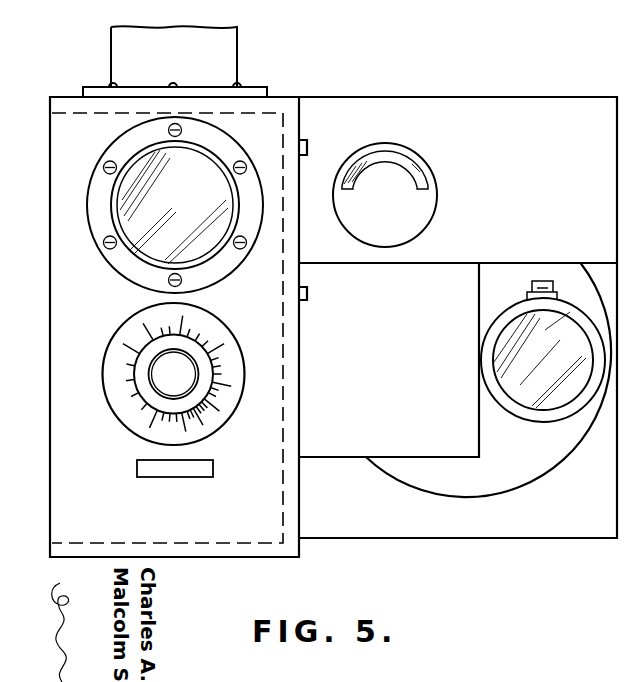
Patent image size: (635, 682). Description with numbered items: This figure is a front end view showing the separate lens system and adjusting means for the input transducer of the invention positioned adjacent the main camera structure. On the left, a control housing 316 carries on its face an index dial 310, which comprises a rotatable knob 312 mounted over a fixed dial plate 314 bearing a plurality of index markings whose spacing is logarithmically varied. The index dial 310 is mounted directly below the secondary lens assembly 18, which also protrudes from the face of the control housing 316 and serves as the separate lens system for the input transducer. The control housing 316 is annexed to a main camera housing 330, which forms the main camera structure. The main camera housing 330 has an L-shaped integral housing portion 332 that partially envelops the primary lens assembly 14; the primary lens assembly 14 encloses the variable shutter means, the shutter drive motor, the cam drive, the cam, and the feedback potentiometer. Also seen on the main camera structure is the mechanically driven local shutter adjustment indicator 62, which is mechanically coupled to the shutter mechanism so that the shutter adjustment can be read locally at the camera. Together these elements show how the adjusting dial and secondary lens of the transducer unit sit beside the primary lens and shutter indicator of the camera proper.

The primary lens assembly 14 is at (530, 366).
The secondary lens assembly 18 is at (165, 213).
The local shutter adjustment indicator 62 is at (397, 145).
The index dial 310 is at (150, 371).
The rotatable knob 312 is at (163, 380).
The fixed dial plate 314 is at (138, 315).
The control housing 316 is at (160, 528).
The main camera housing 330 is at (459, 530).
The L-shaped integral housing portion 332 is at (370, 299).